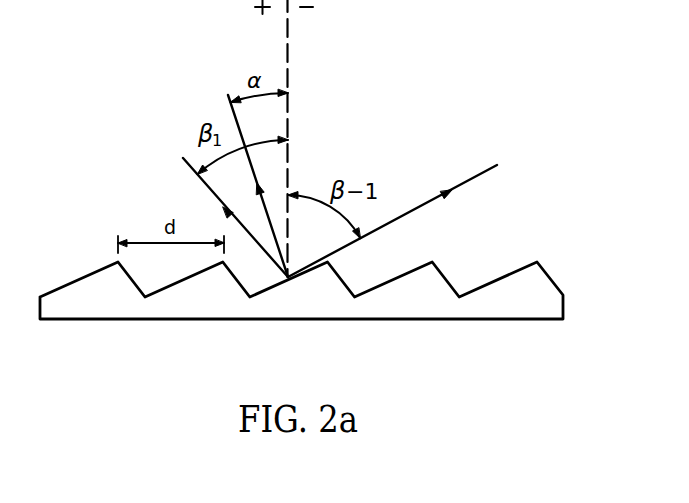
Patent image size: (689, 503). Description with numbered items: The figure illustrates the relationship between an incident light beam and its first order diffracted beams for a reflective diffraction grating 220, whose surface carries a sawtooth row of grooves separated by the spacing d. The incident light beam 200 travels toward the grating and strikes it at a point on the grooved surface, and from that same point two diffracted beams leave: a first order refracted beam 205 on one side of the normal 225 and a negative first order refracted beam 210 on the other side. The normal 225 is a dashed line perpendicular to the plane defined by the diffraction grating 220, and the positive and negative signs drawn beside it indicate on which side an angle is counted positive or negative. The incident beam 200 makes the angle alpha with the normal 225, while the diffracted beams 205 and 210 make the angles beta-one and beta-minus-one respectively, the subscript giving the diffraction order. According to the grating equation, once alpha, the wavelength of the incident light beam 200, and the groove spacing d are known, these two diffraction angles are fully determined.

The incident light beam 200 is at (230, 100).
The first order refracted beam 205 is at (186, 162).
The negative first order refracted beam 210 is at (430, 201).
The reflective diffraction grating 220 is at (523, 312).
The normal 225 is at (290, 33).